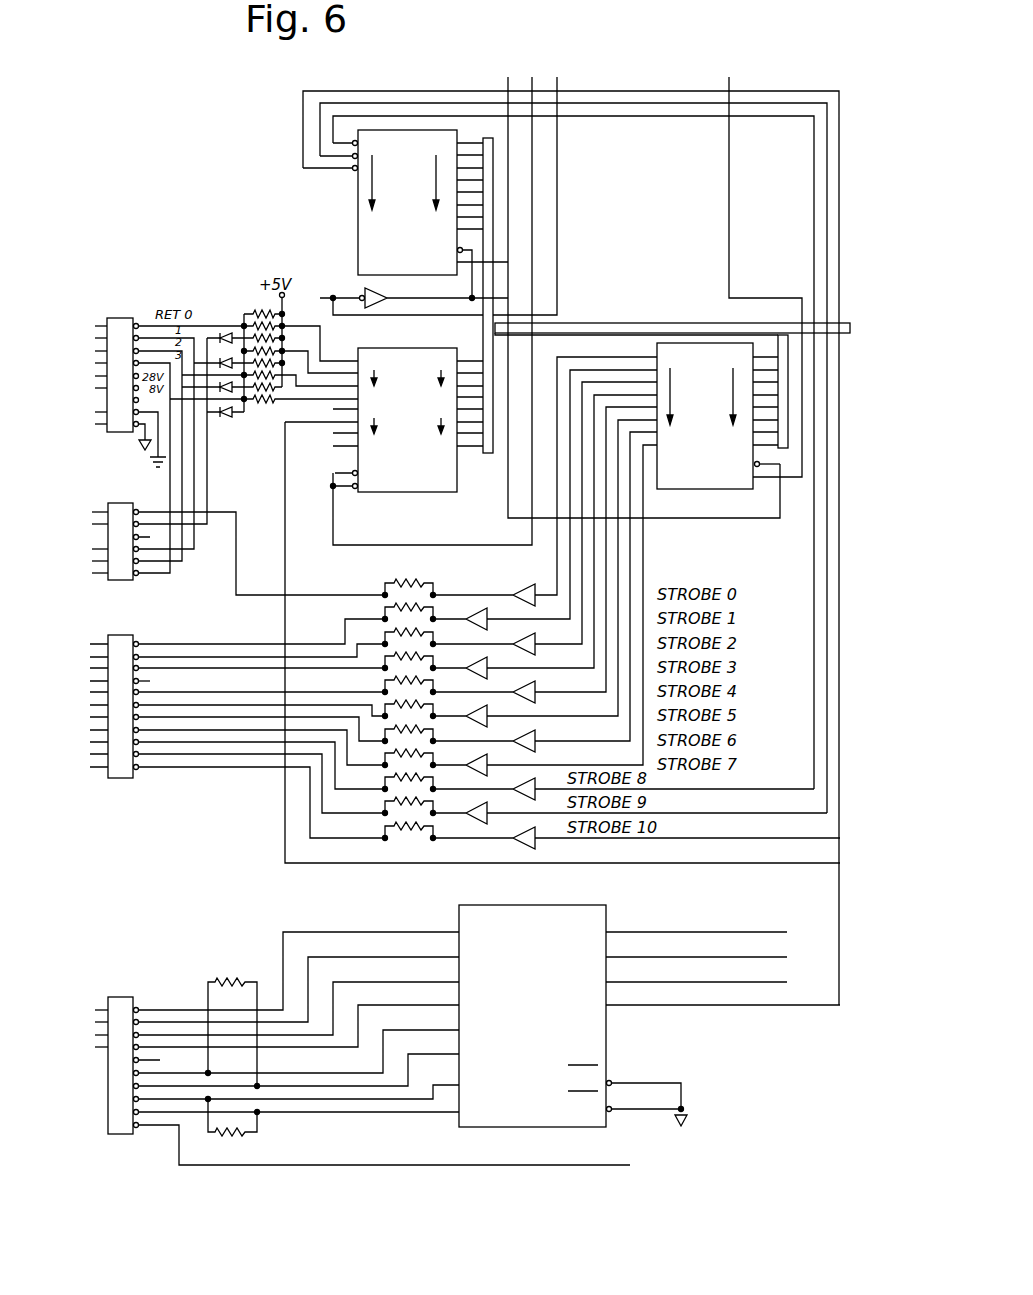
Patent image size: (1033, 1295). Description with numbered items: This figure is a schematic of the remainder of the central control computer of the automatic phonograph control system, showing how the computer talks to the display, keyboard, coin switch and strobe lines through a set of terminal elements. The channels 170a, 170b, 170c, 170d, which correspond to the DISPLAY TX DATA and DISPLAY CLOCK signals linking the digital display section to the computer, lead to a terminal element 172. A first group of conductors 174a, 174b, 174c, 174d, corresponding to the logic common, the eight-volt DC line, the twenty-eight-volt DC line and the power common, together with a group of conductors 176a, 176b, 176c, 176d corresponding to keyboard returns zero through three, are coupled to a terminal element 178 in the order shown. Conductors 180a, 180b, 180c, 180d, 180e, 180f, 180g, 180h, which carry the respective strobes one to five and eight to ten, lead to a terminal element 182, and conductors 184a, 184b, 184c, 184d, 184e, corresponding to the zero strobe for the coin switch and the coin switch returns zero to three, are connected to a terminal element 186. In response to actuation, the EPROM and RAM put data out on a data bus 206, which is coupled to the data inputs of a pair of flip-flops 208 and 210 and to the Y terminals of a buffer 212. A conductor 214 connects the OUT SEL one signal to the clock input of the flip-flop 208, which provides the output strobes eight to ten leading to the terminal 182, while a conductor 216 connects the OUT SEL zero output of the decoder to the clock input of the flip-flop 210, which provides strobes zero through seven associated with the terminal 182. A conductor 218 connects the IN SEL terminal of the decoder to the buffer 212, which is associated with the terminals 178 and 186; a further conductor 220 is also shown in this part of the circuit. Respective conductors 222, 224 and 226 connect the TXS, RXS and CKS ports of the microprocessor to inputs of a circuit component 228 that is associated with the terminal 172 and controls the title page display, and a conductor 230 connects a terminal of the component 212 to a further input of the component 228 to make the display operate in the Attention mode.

The channel 170a is at (98, 1008).
The channel 170b is at (96, 1022).
The channel 170c is at (96, 1035).
The channel 170d is at (98, 1047).
The terminal element 172 is at (115, 1134).
The power line 174a is at (98, 426).
The power line 174b is at (96, 389).
The power line 174c is at (96, 376).
The power line 174d is at (96, 413).
The conductor 176a is at (100, 322).
The conductor 176b is at (96, 336).
The conductor 176c is at (96, 350).
The conductor 176d is at (96, 363).
The terminal element 178 is at (125, 318).
The conductor 180a is at (162, 643).
The conductor 180b is at (192, 656).
The conductor 180c is at (225, 667).
The conductor 180d is at (142, 681).
The conductor 180e is at (228, 682).
The conductor 180f is at (168, 742).
The conductor 180g is at (215, 767).
The conductor 180h is at (98, 770).
The terminal element 182 is at (110, 635).
The conductor 184a is at (96, 512).
The conductor 184b is at (96, 524).
The conductor 184c is at (96, 549).
The conductor 184d is at (96, 561).
The conductor 184e is at (96, 573).
The terminal element 186 is at (116, 503).
The data bus 206 is at (628, 323).
The flip-flop 208 is at (358, 258).
The flip-flop 210 is at (680, 489).
The buffer 212 is at (395, 492).
The conductor 214 is at (506, 80).
The conductor 216 is at (729, 232).
The conductor 218 is at (558, 315).
The reset line 220 is at (356, 318).
The conductor 222 is at (780, 930).
The conductor 224 is at (781, 956).
The conductor 226 is at (782, 981).
The circuit component 228 is at (515, 905).
The conductor 230 is at (812, 1005).